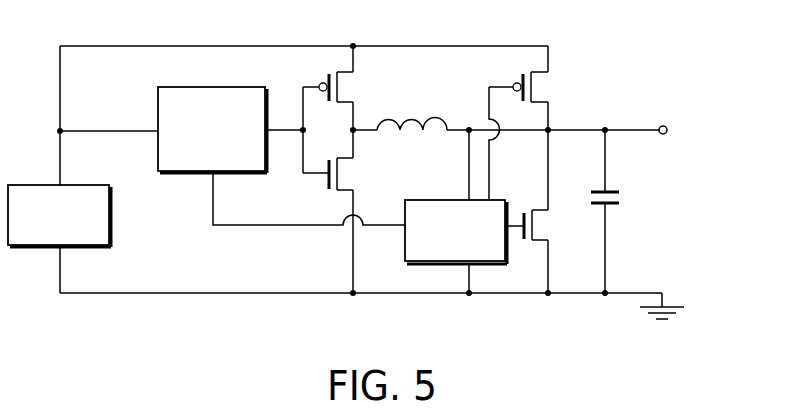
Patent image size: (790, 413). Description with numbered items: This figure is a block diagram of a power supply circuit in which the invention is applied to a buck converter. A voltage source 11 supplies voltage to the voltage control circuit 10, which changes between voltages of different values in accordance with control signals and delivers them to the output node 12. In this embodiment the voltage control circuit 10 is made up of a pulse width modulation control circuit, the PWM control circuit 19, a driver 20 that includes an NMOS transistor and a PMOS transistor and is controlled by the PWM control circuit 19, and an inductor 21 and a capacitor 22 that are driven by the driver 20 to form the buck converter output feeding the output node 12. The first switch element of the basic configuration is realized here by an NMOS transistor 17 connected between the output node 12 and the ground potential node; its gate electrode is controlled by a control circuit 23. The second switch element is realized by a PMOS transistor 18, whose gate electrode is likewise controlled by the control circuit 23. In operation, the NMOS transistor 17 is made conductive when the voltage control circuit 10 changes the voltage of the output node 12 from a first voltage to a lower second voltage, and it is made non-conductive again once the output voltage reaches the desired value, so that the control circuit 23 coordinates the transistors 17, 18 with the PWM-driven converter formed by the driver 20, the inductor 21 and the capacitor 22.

The voltage control circuit 10 is at (304, 244).
The voltage source 11 is at (28, 183).
The output node 12 is at (669, 130).
The NMOS transistor 17 is at (550, 226).
The PMOS transistor 18 is at (553, 85).
The PWM control circuit 19 is at (175, 175).
The driver 20 is at (333, 130).
The inductor 21 is at (423, 112).
The capacitor 22 is at (628, 198).
The control circuit 23 is at (431, 198).